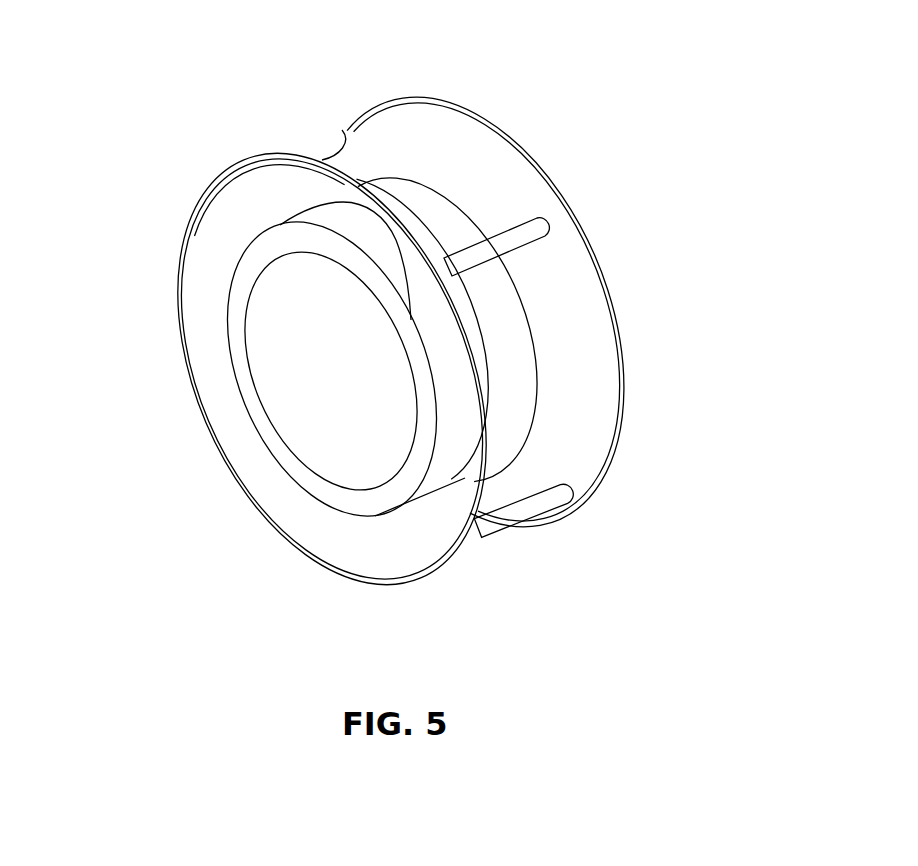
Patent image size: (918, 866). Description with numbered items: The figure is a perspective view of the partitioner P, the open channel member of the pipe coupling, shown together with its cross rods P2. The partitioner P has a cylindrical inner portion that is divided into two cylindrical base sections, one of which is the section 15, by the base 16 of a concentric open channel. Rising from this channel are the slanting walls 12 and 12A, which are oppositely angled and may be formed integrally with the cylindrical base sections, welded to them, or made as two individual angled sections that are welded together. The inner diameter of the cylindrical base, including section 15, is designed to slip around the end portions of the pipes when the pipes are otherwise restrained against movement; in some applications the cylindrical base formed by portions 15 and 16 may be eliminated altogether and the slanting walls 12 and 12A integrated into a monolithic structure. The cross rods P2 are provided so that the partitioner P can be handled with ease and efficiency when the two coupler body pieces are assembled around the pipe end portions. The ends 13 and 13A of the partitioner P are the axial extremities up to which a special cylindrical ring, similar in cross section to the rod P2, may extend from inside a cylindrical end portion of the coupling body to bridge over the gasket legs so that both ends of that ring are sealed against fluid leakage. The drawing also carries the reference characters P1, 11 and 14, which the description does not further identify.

The partitioner P is at (603, 178).
The first portion P1 is at (290, 117).
The cross rods P2 is at (403, 180).
The body front end ring 11 is at (250, 257).
The slanting wall 12 is at (423, 533).
The slanting wall 12A is at (537, 280).
The end of partitioner 13 is at (342, 130).
The end of partitioner 13A is at (495, 123).
The bore 14 is at (310, 297).
The cylindrical base section 15 is at (455, 392).
The base 16 is at (518, 427).